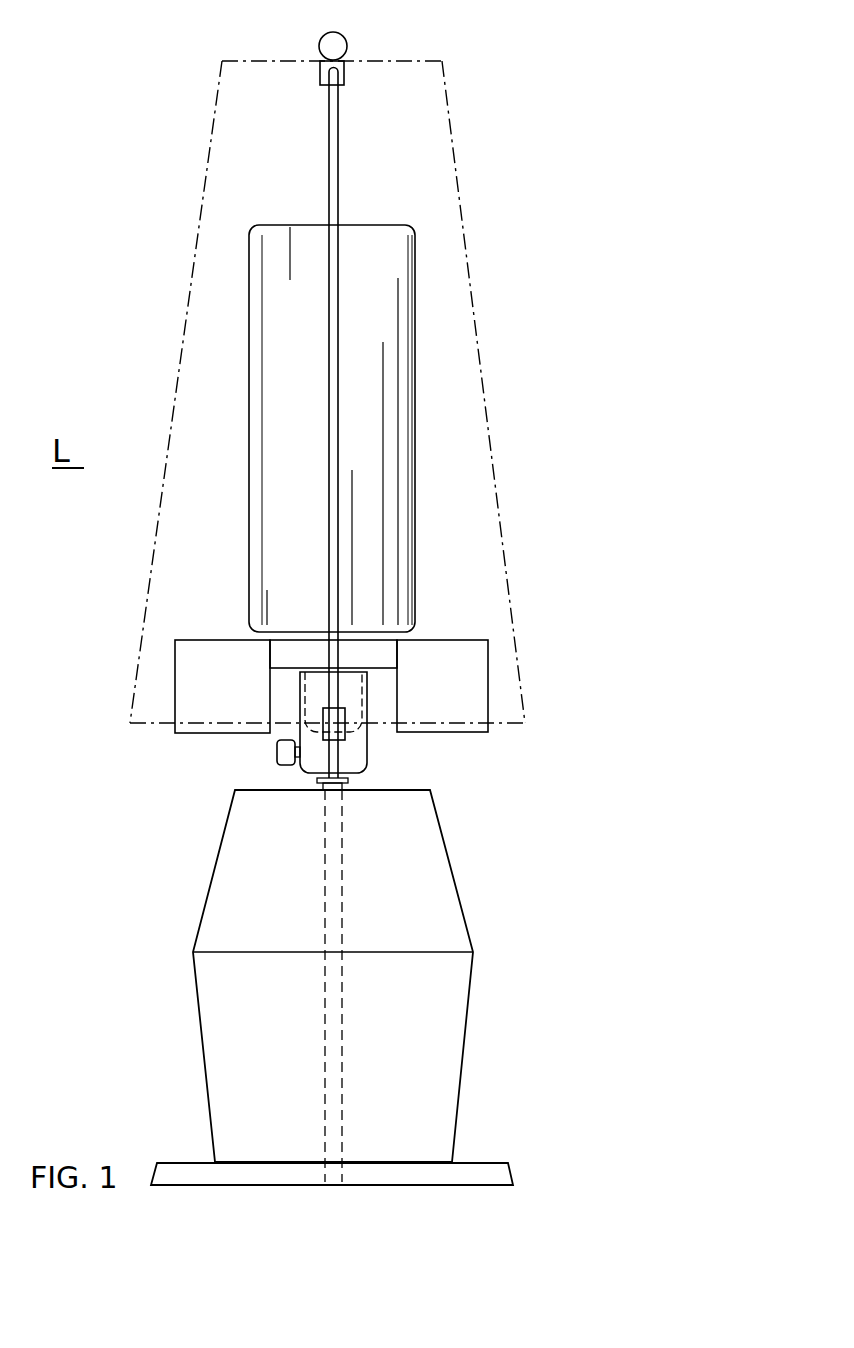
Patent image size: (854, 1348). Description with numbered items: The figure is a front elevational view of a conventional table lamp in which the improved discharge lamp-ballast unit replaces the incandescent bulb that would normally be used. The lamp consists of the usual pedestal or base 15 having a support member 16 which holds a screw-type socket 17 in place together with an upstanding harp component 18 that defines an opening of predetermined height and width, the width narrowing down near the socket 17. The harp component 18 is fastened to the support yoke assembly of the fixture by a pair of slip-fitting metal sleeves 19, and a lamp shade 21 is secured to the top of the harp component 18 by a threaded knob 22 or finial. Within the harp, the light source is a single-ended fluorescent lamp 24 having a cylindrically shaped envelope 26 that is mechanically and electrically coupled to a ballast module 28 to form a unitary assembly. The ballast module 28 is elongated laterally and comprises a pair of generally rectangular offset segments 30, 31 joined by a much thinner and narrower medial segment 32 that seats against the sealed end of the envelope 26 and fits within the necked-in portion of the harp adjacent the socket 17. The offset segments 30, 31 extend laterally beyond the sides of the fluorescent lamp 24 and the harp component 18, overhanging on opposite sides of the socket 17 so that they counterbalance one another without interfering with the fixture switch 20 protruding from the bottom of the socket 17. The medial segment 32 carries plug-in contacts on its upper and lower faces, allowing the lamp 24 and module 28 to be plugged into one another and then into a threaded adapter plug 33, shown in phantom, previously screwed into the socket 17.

The base 15 is at (447, 893).
The support member 16 is at (325, 1058).
The socket 17 is at (355, 762).
The harp component 18 is at (340, 168).
The slip-fitting metal sleeves 19 is at (335, 718).
The fixture switch 20 is at (277, 758).
The lamp shade 21 is at (198, 220).
The threaded knob 22 is at (338, 42).
The single-ended fluorescent lamp 24 is at (415, 320).
The envelope 26 is at (390, 423).
The ballast module 28 is at (452, 638).
The offset segment 30 is at (472, 668).
The offset segment 31 is at (185, 686).
The medial segment 32 is at (293, 655).
The threaded adapter plug 33 is at (350, 693).